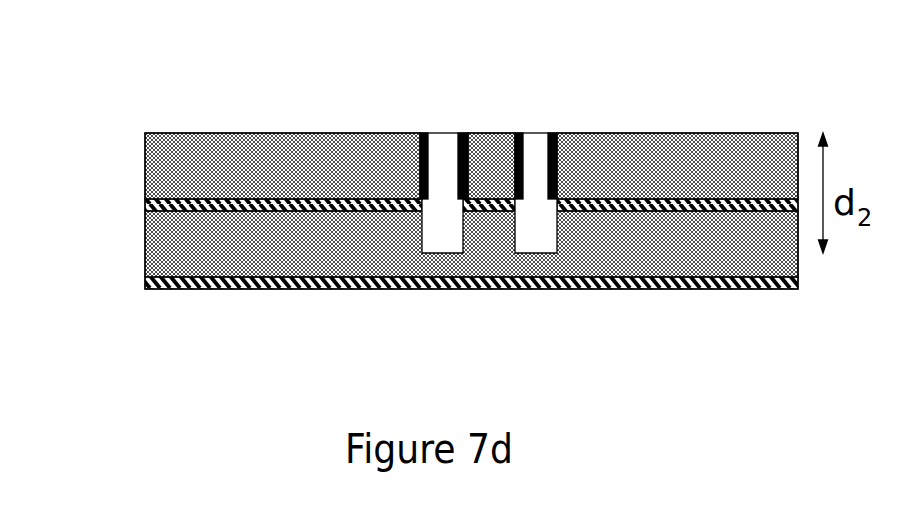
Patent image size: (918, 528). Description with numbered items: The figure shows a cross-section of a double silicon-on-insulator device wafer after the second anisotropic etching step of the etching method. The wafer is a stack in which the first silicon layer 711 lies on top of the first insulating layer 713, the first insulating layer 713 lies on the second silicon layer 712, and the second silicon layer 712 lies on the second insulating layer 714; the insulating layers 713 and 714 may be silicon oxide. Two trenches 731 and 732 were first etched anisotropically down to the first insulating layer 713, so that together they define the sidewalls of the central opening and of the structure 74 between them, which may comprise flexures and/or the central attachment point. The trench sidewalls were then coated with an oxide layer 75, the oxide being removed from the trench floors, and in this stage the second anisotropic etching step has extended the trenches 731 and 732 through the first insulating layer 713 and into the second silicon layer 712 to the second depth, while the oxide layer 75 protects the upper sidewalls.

The first silicon layer 711 is at (216, 158).
The second silicon layer 712 is at (184, 240).
The first insulating layer 713 is at (183, 194).
The second insulating layer 714 is at (229, 281).
The structure 74 is at (492, 147).
The oxide layer 75 is at (448, 144).
The trench 731 is at (433, 240).
The trench 732 is at (543, 239).